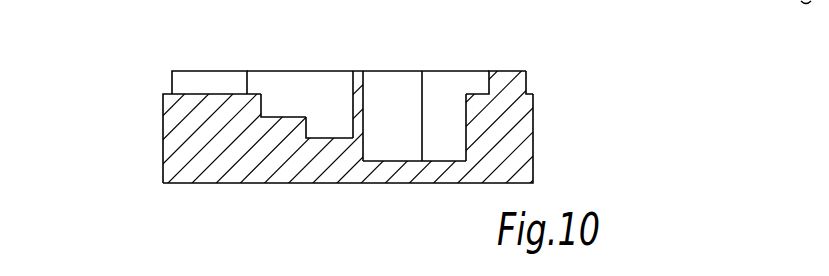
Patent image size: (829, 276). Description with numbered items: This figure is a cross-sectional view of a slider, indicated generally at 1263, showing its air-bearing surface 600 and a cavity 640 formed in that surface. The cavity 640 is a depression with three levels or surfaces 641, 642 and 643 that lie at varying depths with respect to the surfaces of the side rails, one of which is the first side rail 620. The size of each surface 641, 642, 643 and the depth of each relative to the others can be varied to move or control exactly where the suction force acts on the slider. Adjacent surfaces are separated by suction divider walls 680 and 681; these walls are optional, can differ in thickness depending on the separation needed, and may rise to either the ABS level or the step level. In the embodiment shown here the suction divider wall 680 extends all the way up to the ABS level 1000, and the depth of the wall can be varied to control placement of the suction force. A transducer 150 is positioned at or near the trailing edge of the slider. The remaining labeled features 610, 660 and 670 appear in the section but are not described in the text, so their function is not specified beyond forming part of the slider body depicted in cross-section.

The mold assembly 1263 is at (116, 93).
The air-bearing surface 600 is at (205, 92).
The cavity 640 is at (286, 116).
The first cavity surface 641 is at (296, 116).
The second cavity surface 642 is at (320, 138).
The ABS level 1000 is at (375, 72).
The first side rail 620 is at (416, 72).
The raised tab 610 is at (502, 76).
The transducer 150 is at (527, 71).
The left body portion 660 is at (163, 131).
The right body portion 670 is at (533, 126).
The suction divider wall 681 is at (361, 140).
The suction divider wall 680 is at (320, 138).
The third cavity surface 643 is at (437, 156).